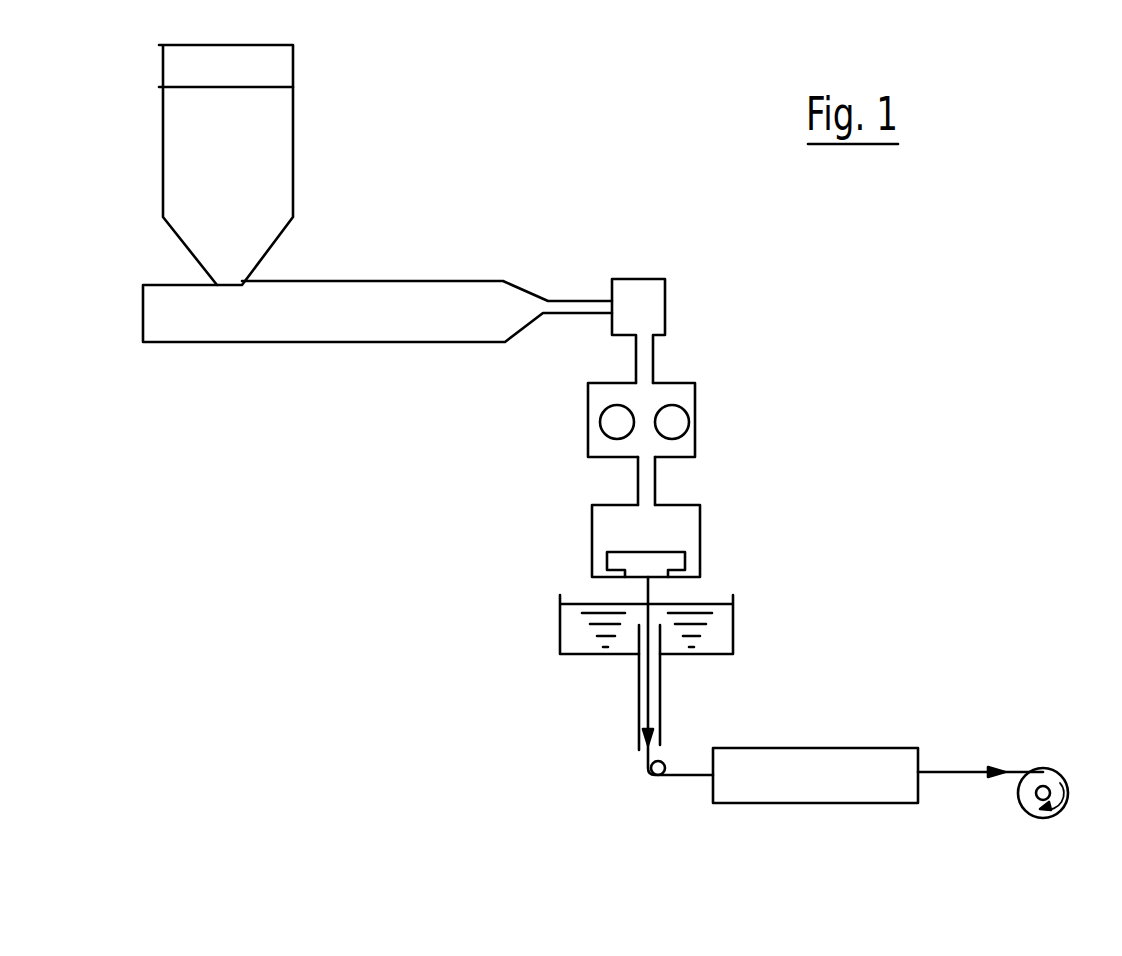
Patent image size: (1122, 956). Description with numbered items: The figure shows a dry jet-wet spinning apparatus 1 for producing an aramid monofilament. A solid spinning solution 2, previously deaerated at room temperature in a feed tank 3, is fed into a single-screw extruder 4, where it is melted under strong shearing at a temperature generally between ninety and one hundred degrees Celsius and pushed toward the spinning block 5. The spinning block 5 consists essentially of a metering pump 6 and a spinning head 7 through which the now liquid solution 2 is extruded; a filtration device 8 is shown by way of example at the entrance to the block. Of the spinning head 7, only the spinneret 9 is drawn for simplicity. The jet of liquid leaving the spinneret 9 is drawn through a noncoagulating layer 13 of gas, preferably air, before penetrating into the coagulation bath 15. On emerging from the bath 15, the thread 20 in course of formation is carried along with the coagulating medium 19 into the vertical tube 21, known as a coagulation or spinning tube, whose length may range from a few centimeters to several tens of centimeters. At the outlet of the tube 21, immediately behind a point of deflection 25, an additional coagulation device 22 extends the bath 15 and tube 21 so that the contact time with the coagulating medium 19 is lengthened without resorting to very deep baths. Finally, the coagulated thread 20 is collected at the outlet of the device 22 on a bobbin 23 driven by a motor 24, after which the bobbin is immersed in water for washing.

The spinning apparatus 1 is at (845, 383).
The spinning solution 2 is at (283, 135).
The feed tank 3 is at (293, 180).
The single-screw extruder 4 is at (385, 281).
The spinning block 5 is at (693, 377).
The metering pump 6 is at (695, 425).
The spinning head 7 is at (700, 537).
The filtration device 8 is at (665, 279).
The spinneret 9 is at (637, 551).
The noncoagulating layer 13 is at (703, 596).
The coagulation bath 15 is at (733, 632).
The coagulating medium 19 is at (580, 643).
The thread 20 is at (660, 697).
The vertical tube 21 is at (639, 739).
The additional coagulation device 22 is at (830, 762).
The bobbin 23 is at (1018, 805).
The motor 24 is at (1048, 788).
The point of deflection 25 is at (666, 762).